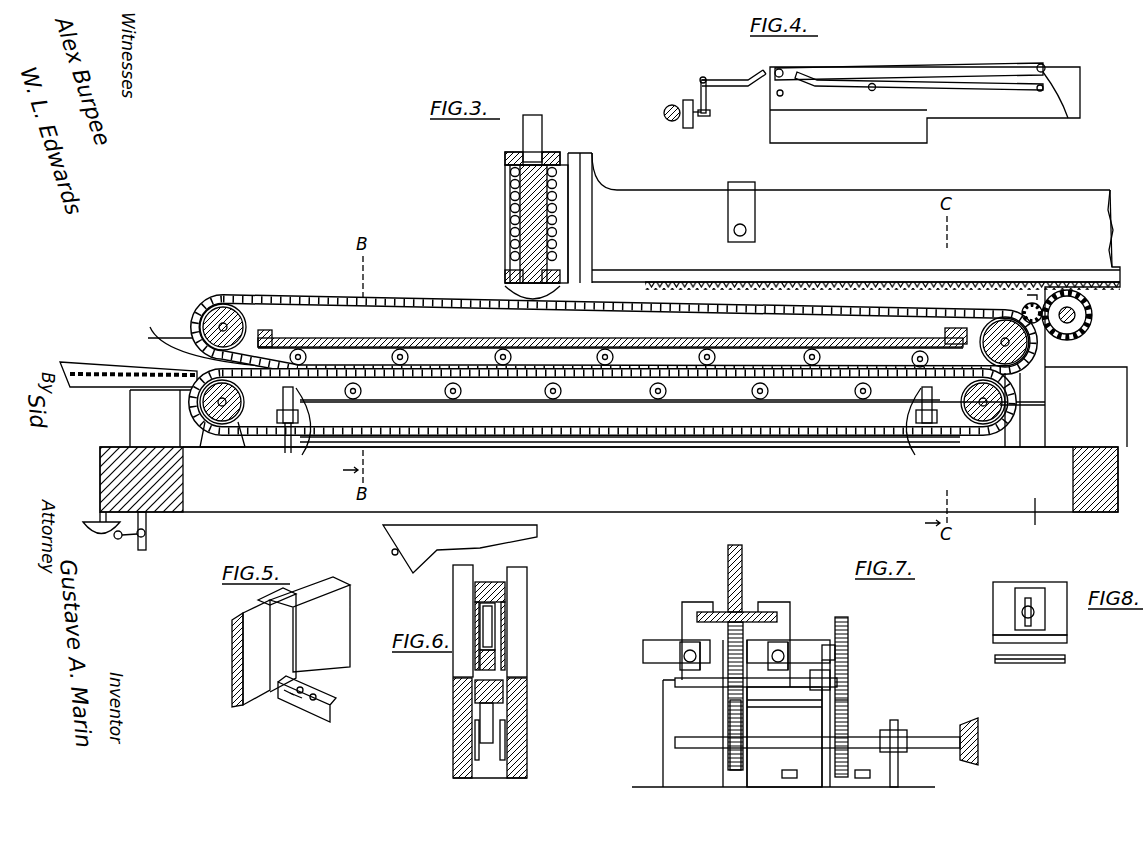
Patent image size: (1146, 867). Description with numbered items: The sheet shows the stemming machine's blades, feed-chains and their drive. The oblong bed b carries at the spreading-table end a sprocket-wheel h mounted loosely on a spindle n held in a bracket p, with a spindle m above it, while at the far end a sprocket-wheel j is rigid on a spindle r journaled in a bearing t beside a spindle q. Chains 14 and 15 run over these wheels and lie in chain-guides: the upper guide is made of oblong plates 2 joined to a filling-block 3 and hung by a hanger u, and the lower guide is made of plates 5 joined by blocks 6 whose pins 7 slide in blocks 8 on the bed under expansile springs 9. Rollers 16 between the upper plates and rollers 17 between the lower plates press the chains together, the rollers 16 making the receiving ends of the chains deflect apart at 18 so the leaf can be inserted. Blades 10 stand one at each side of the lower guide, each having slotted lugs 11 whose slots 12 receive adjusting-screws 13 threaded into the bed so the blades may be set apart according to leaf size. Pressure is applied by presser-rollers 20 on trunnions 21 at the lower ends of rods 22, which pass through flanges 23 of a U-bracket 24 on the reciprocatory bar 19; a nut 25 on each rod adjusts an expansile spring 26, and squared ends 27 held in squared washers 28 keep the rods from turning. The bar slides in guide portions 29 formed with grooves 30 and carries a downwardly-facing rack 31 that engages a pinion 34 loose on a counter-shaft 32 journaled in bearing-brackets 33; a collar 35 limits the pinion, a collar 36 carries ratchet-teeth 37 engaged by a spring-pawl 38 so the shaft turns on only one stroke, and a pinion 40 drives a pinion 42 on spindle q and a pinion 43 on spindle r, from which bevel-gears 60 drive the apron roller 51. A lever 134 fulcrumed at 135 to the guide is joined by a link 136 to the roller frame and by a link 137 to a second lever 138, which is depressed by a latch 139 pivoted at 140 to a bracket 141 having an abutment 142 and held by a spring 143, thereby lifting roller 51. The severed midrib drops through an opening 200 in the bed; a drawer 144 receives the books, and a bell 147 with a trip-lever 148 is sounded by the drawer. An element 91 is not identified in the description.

In FIG. 3, the oblong plates 2 is at (343, 347).
In FIG. 6, the oblong plates 2 is at (506, 606).
In FIG. 3, the filling-block 3 is at (383, 345).
In FIG. 6, the filling-block 3 is at (505, 586).
In FIG. 3, the oblong plates 5 is at (490, 402).
In FIG. 6, the oblong plates 5 is at (520, 742).
In FIG. 3, the blocks 6 is at (912, 440).
In FIG. 3, the pins 7 is at (288, 425).
In FIG. 3, the blocks 8 is at (927, 496).
In FIG. 3, the expansile springs 9 is at (233, 305).
In FIG. 3, the blades 10 is at (412, 440).
In FIG. 6, the blades 10 is at (460, 750).
In FIG. 8, the blades 10 is at (1067, 640).
In FIG. 8, the slotted lateral lugs 11 is at (1015, 590).
In FIG. 8, the slots 12 is at (1035, 600).
In FIG. 8, the adjusting-screws 13 is at (1038, 604).
In FIG. 3, the chain 14 is at (436, 300).
In FIG. 6, the chain 14 is at (496, 660).
In FIG. 3, the chain 15 is at (452, 440).
In FIG. 6, the chain 15 is at (475, 688).
In FIG. 3, the rollers 16 is at (407, 350).
In FIG. 6, the rollers 16 is at (483, 618).
In FIG. 3, the rollers 17 is at (555, 402).
In FIG. 6, the rollers 17 is at (493, 712).
In FIG. 3, the deflected receiving ends 18 is at (152, 330).
In FIG. 3, the reciprocatory bar 19 is at (688, 190).
In FIG. 5, the reciprocatory bar 19 is at (240, 645).
In FIG. 3, the presser-rollers 20 is at (515, 296).
In FIG. 6, the presser-rollers 20 is at (520, 632).
In FIG. 3, the trunnions 21 is at (522, 225).
In FIG. 3, the rods 22 is at (518, 210).
In FIG. 3, the flanges 23 is at (505, 158).
In FIG. 3, the U-bracket 24 is at (583, 216).
In FIG. 3, the nut 25 is at (506, 258).
In FIG. 3, the expansile spring 26 is at (510, 190).
In FIG. 3, the squared ends 27 is at (535, 120).
In FIG. 3, the interiorly-squared washers 28 is at (548, 157).
In FIG. 3, the guide portions 29 is at (1110, 250).
In FIG. 4, the guide portions 29 is at (1070, 72).
In FIG. 7, the guide portions 29 is at (686, 630).
In FIG. 7, the grooves 30 is at (705, 640).
In FIG. 3, the toothed rack 31 is at (768, 282).
In FIG. 7, the toothed rack 31 is at (742, 610).
In FIG. 3, the counter-shaft 32 is at (1072, 322).
In FIG. 7, the counter-shaft 32 is at (848, 640).
In FIG. 7, the bearing-brackets 33 is at (784, 737).
In FIG. 3, the pinion 34 is at (1077, 322).
In FIG. 7, the pinion 34 is at (722, 610).
In FIG. 7, the collar 35 is at (690, 645).
In FIG. 3, the collar 36 is at (1032, 303).
In FIG. 7, the collar 36 is at (790, 645).
In FIG. 3, the ratchet-teeth 37 is at (1060, 296).
In FIG. 3, the spring-pawl 38 is at (1079, 315).
In FIG. 7, the pinion 40 is at (848, 650).
In FIG. 7, the pinion 42 is at (848, 683).
In FIG. 7, the pinion 43 is at (848, 712).
In FIG. 4, the roller 51 is at (668, 106).
In FIG. 7, the bevel-gears 60 is at (970, 722).
In FIG. 3, the block 91 is at (748, 228).
In FIG. 4, the lever 134 is at (740, 70).
In FIG. 4, the fulcrum 135 is at (872, 83).
In FIG. 4, the link 136 is at (708, 100).
In FIG. 4, the link 137 is at (1072, 111).
In FIG. 4, the second lever 138 is at (966, 65).
In FIG. 5, the latch 139 is at (315, 712).
In FIG. 5, the pivot 140 is at (305, 690).
In FIG. 5, the bracket 141 is at (286, 700).
In FIG. 5, the abutment 142 is at (298, 705).
In FIG. 5, the spring 143 is at (330, 708).
In FIG. 6, the drawer 144 is at (385, 532).
In FIG. 3, the bell 147 is at (100, 533).
In FIG. 3, the trip-lever 148 is at (118, 540).
In FIG. 3, the opening 200 is at (1046, 523).
In FIG. 8, the bed b is at (995, 615).
In FIG. 3, the sprocket-wheel h is at (225, 425).
In FIG. 3, the sprocket-wheel j is at (1010, 405).
In FIG. 7, the sprocket-wheel j is at (733, 760).
In FIG. 3, the spindle m is at (205, 312).
In FIG. 3, the spindle n is at (210, 402).
In FIG. 3, the bracket p is at (240, 440).
In FIG. 3, the spindle q is at (1005, 318).
In FIG. 7, the spindle q is at (680, 683).
In FIG. 3, the spindle r is at (985, 420).
In FIG. 7, the spindle r is at (675, 742).
In FIG. 3, the bearing t is at (1012, 362).
In FIG. 7, the bearing t is at (730, 695).
In FIG. 3, the hanger u is at (268, 330).
In FIG. 7, the hanger u is at (680, 665).